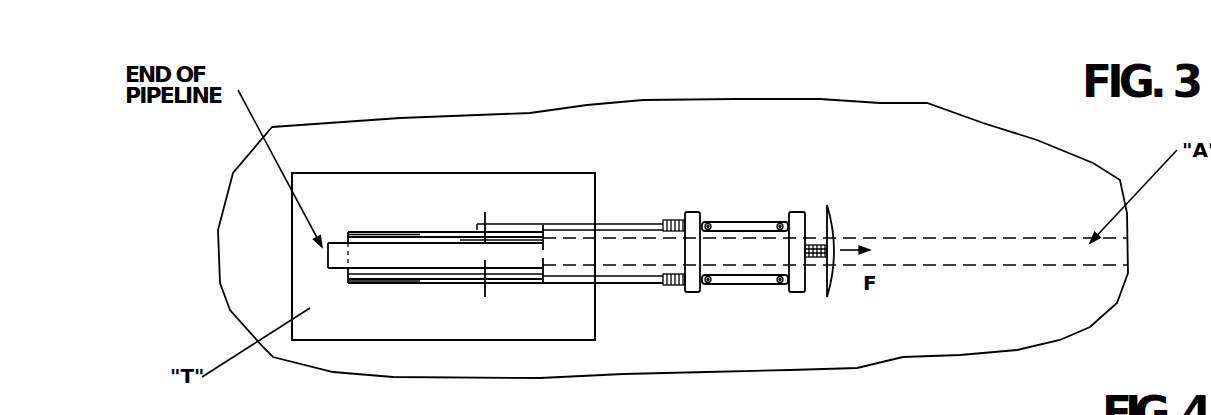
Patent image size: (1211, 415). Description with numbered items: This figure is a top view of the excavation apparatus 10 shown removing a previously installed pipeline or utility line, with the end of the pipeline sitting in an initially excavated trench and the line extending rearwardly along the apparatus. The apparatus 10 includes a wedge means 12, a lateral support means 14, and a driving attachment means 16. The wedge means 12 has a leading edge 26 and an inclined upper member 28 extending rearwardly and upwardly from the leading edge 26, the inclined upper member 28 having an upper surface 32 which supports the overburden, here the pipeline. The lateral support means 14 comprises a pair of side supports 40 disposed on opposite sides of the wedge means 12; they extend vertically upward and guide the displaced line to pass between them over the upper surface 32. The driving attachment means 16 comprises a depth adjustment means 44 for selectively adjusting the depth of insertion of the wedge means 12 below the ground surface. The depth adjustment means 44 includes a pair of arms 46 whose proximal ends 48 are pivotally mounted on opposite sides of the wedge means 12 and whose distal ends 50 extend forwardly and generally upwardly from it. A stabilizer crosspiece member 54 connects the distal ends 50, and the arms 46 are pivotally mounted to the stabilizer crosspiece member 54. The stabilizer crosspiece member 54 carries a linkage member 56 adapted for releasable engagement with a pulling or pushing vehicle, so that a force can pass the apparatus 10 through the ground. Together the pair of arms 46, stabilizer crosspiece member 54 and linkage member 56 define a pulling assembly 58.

The excavation apparatus 10 is at (97, 258).
The wedge means 12 is at (443, 212).
The lateral support means 14 is at (367, 230).
The driving attachment means 16 is at (737, 160).
The leading edge 26 is at (553, 278).
The inclined upper member 28 is at (527, 230).
The upper surface 32 is at (472, 237).
The side supports 40 is at (373, 233).
The depth adjustment means 44 is at (632, 160).
The pair of arms 46 is at (620, 225).
The proximal ends 48 is at (488, 225).
The distal ends 50 is at (658, 222).
The stabilizer crosspiece member 54 is at (750, 225).
The linkage member 56 is at (832, 222).
The pulling assembly 58 is at (760, 303).